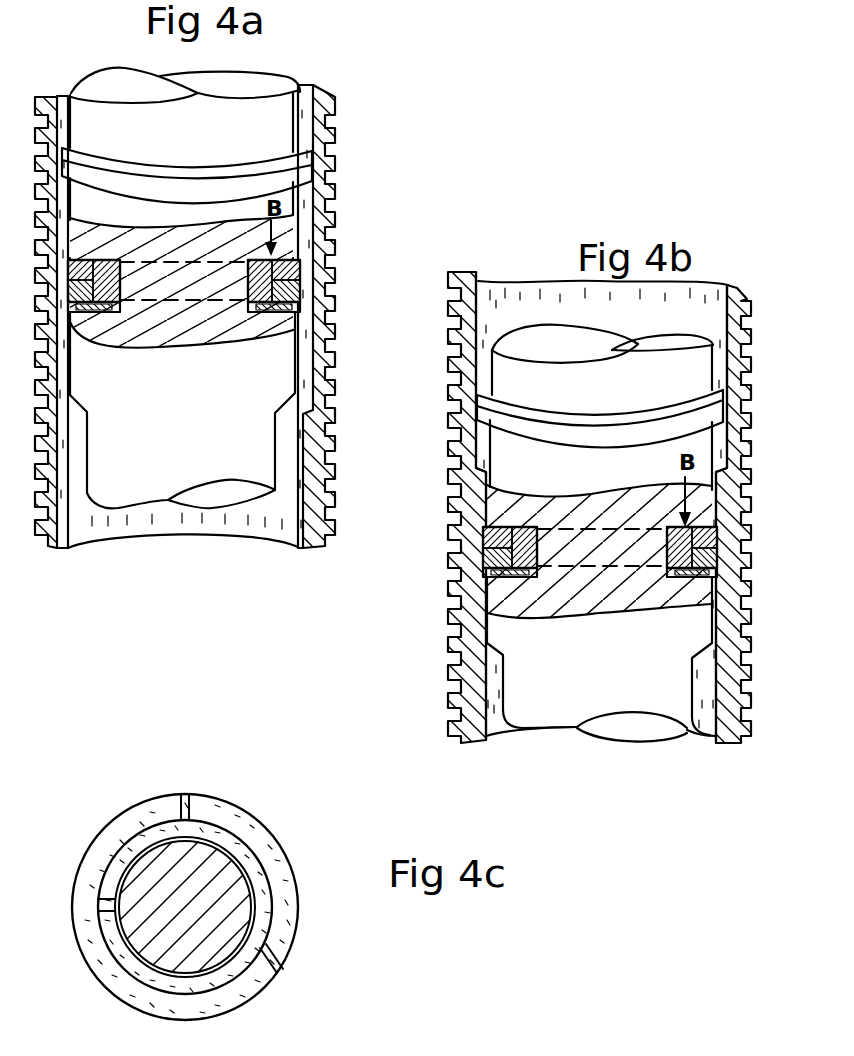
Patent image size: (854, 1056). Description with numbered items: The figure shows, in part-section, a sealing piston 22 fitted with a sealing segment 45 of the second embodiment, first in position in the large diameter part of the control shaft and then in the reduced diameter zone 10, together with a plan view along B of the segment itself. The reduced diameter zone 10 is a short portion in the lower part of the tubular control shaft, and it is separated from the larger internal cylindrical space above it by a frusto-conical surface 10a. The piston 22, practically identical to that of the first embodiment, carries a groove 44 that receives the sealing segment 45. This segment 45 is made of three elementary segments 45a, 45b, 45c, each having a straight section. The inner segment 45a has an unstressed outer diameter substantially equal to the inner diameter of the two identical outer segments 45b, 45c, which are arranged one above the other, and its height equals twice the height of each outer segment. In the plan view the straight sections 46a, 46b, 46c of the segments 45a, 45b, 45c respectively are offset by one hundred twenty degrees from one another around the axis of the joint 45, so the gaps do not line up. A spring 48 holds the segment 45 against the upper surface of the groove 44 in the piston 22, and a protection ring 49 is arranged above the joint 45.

In FIG. 4A, the reduced diameter zone 10 is at (316, 512).
In FIG. 4B, the reduced diameter zone 10 is at (703, 684).
In FIG. 4B, the frusto-conical surface 10a is at (742, 472).
In FIG. 4A, the piston 22 is at (272, 124).
In FIG. 4A, the groove 44 is at (297, 247).
In FIG. 4A, the sealing segment 45 is at (237, 328).
In FIG. 4B, the sealing segment 45 is at (488, 575).
In FIG. 4A, the elementary segment 45a is at (265, 306).
In FIG. 4C, the elementary segment 45a is at (245, 858).
In FIG. 4A, the elementary segment 45b is at (300, 268).
In FIG. 4C, the elementary segment 45b is at (272, 872).
In FIG. 4A, the elementary segment 45c is at (296, 300).
In FIG. 4C, the straight section 46a is at (110, 897).
In FIG. 4C, the straight section 46b is at (273, 951).
In FIG. 4C, the straight section 46c is at (190, 807).
In FIG. 4A, the spring 48 is at (288, 320).
In FIG. 4A, the protection ring 49 is at (282, 175).
In FIG. 4B, the protection ring 49 is at (695, 424).